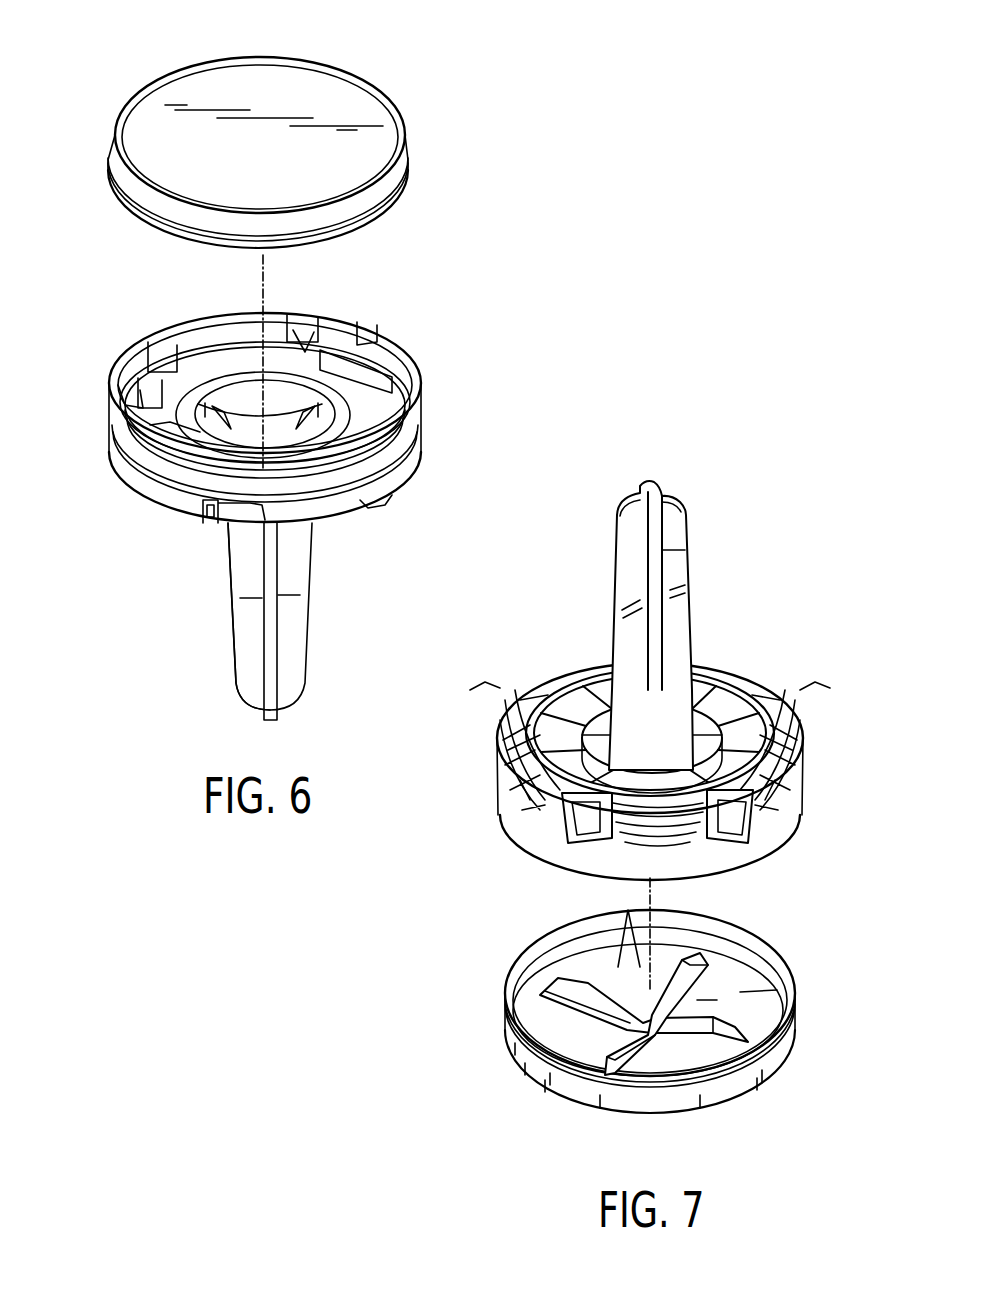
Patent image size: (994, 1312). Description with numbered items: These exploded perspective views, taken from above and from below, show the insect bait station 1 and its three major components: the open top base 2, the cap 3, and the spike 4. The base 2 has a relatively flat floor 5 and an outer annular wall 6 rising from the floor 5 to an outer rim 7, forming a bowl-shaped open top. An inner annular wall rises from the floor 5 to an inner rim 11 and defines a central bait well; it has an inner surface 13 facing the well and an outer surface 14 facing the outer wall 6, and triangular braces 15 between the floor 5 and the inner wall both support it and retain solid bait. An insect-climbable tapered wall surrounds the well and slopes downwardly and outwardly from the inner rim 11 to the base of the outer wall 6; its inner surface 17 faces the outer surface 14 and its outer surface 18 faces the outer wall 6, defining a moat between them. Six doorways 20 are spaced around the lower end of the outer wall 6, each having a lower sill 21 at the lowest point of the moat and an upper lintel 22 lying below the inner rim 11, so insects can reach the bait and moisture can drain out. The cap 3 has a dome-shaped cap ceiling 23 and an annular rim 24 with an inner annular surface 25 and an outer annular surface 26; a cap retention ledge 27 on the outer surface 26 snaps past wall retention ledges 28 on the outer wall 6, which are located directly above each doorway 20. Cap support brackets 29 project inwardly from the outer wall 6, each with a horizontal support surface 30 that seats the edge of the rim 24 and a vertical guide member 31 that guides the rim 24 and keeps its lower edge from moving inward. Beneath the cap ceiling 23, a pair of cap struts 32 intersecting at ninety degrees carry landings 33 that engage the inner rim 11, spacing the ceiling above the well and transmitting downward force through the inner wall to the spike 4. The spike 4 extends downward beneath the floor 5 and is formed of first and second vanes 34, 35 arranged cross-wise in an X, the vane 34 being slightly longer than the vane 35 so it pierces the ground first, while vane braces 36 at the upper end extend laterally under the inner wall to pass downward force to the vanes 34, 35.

In FIG. 6, the insect bait station 1 is at (436, 261).
In FIG. 7, the insect bait station 1 is at (471, 902).
In FIG. 6, the open top base 2 is at (154, 507).
In FIG. 7, the open top base 2 is at (763, 671).
In FIG. 6, the cap 3 is at (343, 63).
In FIG. 7, the cap 3 is at (543, 1087).
In FIG. 6, the spike 4 is at (313, 643).
In FIG. 7, the spike 4 is at (609, 548).
In FIG. 6, the floor 5 is at (273, 433).
In FIG. 7, the floor 5 is at (693, 743).
In FIG. 6, the outer annular wall 6 is at (415, 440).
In FIG. 7, the outer annular wall 6 is at (500, 800).
In FIG. 6, the outer rim 7 is at (362, 335).
In FIG. 6, the inner rim 11 is at (227, 440).
In FIG. 6, the inner surface of inner wall 13 is at (250, 395).
In FIG. 7, the outer surface of inner wall 14 is at (643, 783).
In FIG. 6, the triangular-shaped braces 15 is at (318, 405).
In FIG. 7, the inner surface of tapered wall 17 is at (560, 708).
In FIG. 6, the outer surface of tapered wall 18 is at (170, 422).
In FIG. 6, the doorways 20 is at (376, 509).
In FIG. 7, the doorways 20 is at (567, 651).
In FIG. 7, the lower sill 21 is at (730, 813).
In FIG. 6, the upper lintel 22 is at (230, 525).
In FIG. 7, the upper lintel 22 is at (613, 837).
In FIG. 6, the cap ceiling 23 is at (235, 92).
In FIG. 7, the cap ceiling 23 is at (557, 1027).
In FIG. 6, the annular rim 24 is at (158, 228).
In FIG. 7, the annular rim 24 is at (523, 953).
In FIG. 7, the inner annular surface 25 is at (745, 952).
In FIG. 6, the outer annular surface 26 is at (145, 200).
In FIG. 7, the outer annular surface 26 is at (757, 1080).
In FIG. 6, the cap retention ledge 27 is at (328, 228).
In FIG. 7, the cap retention ledge 27 is at (695, 1093).
In FIG. 6, the base wall retention ledge 28 is at (300, 335).
In FIG. 6, the cap support brackets 29 is at (143, 408).
In FIG. 6, the support surface 30 is at (140, 370).
In FIG. 6, the guide member 31 is at (222, 385).
In FIG. 7, the cap struts 32 is at (629, 950).
In FIG. 7, the landing 33 is at (578, 963).
In FIG. 6, the first vane 34 is at (258, 685).
In FIG. 7, the first vane 34 is at (690, 548).
In FIG. 6, the second vane 35 is at (306, 672).
In FIG. 7, the second vane 35 is at (683, 508).
In FIG. 7, the vane braces 36 is at (704, 700).